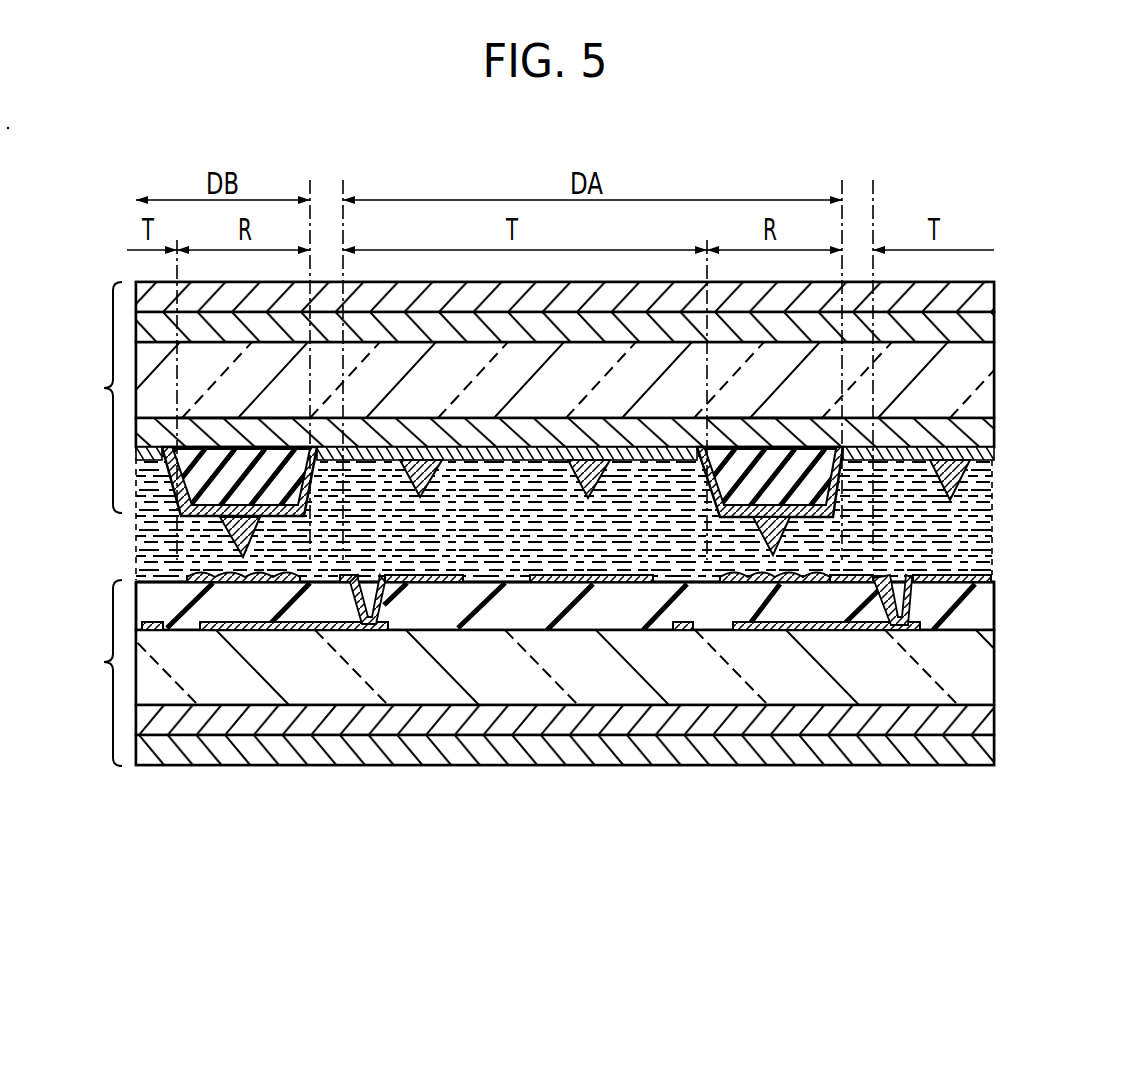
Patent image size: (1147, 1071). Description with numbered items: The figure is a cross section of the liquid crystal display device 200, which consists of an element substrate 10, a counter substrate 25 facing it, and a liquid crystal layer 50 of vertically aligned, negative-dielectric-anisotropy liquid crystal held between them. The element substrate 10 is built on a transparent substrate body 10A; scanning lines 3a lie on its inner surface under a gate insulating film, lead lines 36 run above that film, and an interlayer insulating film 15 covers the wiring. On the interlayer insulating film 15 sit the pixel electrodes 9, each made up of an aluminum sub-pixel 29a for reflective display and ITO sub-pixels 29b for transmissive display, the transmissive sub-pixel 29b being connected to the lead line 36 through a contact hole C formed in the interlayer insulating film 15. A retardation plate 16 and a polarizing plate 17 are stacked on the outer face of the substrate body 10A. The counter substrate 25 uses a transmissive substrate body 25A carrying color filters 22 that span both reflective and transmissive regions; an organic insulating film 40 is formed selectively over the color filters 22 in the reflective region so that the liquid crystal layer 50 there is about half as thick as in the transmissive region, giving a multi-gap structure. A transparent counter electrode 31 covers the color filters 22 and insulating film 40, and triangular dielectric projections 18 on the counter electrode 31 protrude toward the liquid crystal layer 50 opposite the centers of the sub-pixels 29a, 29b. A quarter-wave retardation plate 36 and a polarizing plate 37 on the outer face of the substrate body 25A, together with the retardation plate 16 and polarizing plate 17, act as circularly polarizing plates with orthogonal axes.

The liquid crystal display device 200 is at (946, 190).
The polarizing plate 37 is at (978, 298).
The retardation plate 36 is at (980, 340).
The substrate body 25A is at (980, 384).
The color filters 22 is at (982, 437).
The counter electrode 31 is at (994, 455).
The liquid crystal layer 50 is at (978, 520).
The pixel electrode 9 is at (983, 578).
The interlayer insulating film 15 is at (974, 612).
The substrate body 10A is at (974, 672).
The retardation plate 16 is at (974, 726).
The polarizing plate 17 is at (983, 757).
The counter substrate 25 is at (97, 397).
The element substrate 10 is at (97, 673).
The insulating film 40 is at (176, 490).
The dielectric projections 18 is at (252, 530).
The contact hole C is at (374, 587).
The scanning lines 3a is at (150, 632).
The sub-pixel for reflective display 29a is at (196, 583).
The sub-pixel for transmissive display 29b is at (438, 583).